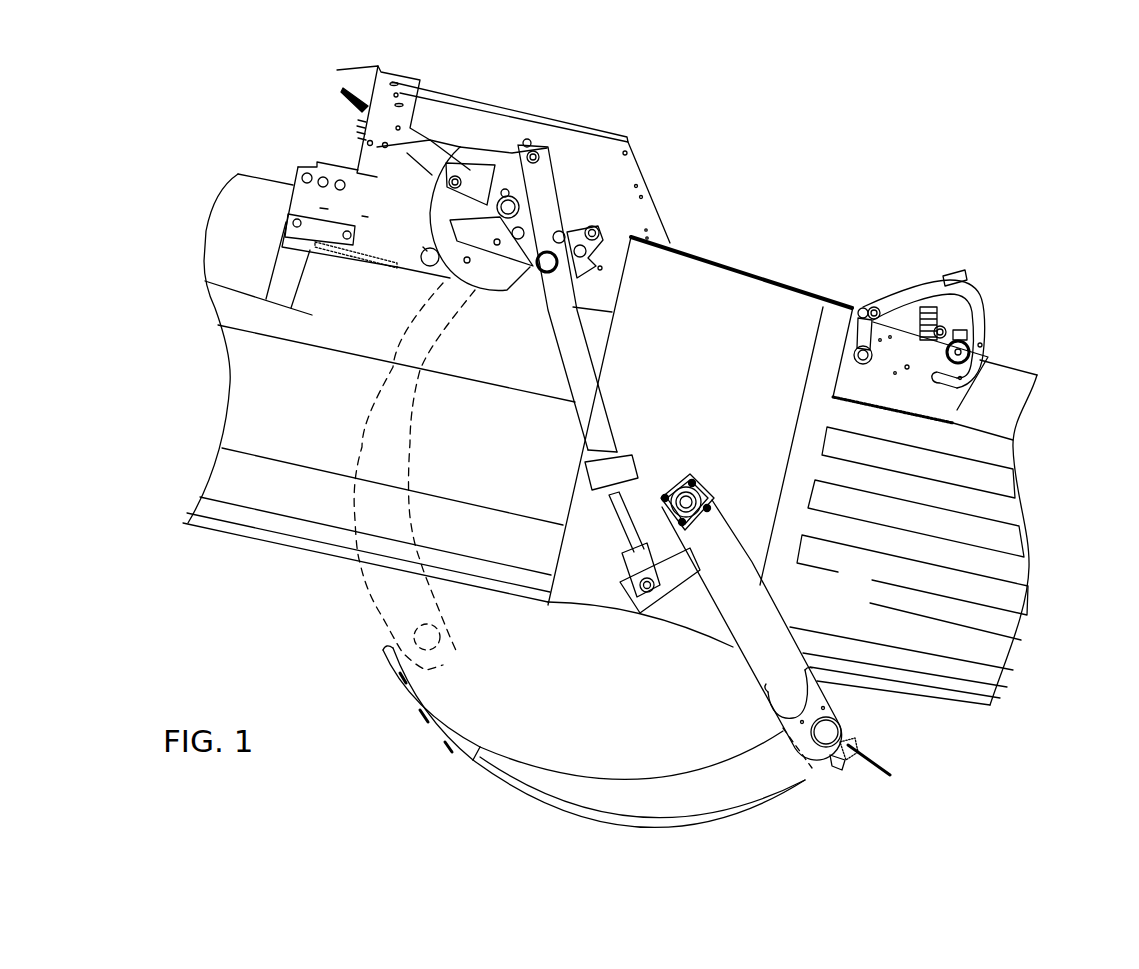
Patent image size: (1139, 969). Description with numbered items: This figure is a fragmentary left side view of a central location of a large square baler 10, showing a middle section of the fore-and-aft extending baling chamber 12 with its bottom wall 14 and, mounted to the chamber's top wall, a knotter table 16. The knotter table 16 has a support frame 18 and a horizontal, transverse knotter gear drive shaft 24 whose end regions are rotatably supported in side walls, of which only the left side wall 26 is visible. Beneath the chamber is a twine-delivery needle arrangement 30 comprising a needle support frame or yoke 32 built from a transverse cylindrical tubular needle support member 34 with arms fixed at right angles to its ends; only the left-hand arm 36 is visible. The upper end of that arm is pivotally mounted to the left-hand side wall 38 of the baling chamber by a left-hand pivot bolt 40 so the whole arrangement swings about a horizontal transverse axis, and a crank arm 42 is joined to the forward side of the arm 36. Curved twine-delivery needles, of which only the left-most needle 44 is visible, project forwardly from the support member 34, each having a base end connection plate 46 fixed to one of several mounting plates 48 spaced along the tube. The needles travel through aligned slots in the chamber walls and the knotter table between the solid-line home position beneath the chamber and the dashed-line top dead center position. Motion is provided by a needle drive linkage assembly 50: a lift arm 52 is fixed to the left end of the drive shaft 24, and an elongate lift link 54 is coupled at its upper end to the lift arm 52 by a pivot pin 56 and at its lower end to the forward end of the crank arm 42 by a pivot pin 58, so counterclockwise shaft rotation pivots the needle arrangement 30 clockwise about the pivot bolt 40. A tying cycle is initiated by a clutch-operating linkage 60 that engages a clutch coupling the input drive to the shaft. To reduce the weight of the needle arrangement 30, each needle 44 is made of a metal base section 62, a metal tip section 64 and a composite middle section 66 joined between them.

The large square baler 10 is at (724, 208).
The baling chamber 12 is at (1034, 590).
The bottom wall 14 is at (942, 700).
The knotter table 16 is at (316, 132).
The support frame 18 is at (292, 170).
The knotter gear drive shaft 24 is at (517, 194).
The left side wall 26 is at (495, 107).
The twine-delivery needle arrangement 30 is at (727, 687).
The needle support frame or yoke 32 is at (792, 618).
The tubular needle support member 34 is at (842, 718).
The left-hand arm 36 is at (790, 618).
The left-hand side wall 38 is at (522, 460).
The left-hand pivot bolt 40 is at (712, 492).
The crank arm 42 is at (623, 610).
The twine-delivery needle 44 is at (642, 760).
The base end connection plate 46 is at (820, 753).
The mounting plate 48 is at (843, 760).
The needle drive linkage assembly 50 is at (637, 417).
The lift arm 52 is at (560, 207).
The lift link 54 is at (560, 357).
The pivot pin 56 is at (557, 277).
The pivot pin 58 is at (620, 582).
The clutch-operating linkage 60 is at (872, 298).
The metal base section 62 is at (822, 781).
The metal tip section 64 is at (417, 715).
The composite middle section 66 is at (658, 831).